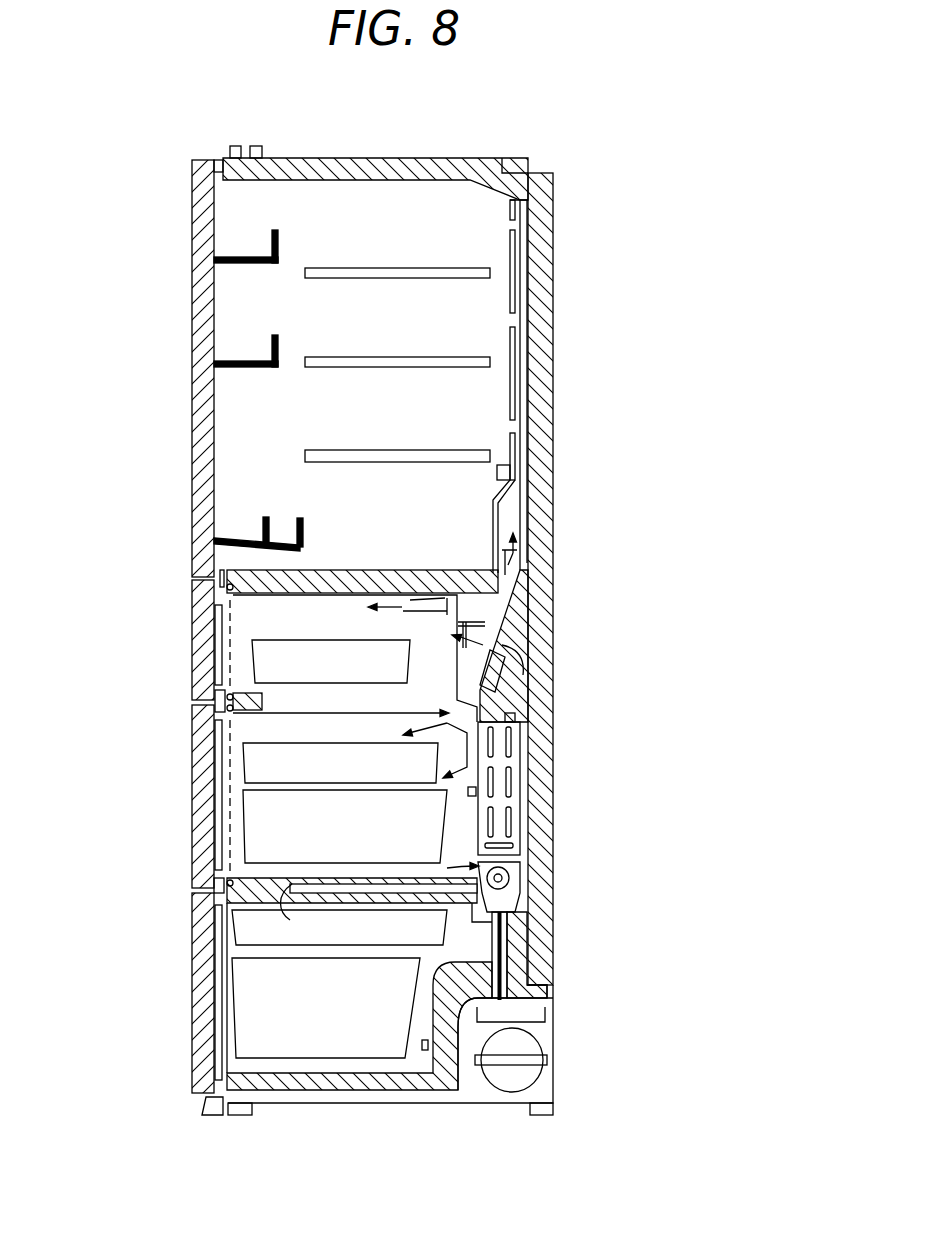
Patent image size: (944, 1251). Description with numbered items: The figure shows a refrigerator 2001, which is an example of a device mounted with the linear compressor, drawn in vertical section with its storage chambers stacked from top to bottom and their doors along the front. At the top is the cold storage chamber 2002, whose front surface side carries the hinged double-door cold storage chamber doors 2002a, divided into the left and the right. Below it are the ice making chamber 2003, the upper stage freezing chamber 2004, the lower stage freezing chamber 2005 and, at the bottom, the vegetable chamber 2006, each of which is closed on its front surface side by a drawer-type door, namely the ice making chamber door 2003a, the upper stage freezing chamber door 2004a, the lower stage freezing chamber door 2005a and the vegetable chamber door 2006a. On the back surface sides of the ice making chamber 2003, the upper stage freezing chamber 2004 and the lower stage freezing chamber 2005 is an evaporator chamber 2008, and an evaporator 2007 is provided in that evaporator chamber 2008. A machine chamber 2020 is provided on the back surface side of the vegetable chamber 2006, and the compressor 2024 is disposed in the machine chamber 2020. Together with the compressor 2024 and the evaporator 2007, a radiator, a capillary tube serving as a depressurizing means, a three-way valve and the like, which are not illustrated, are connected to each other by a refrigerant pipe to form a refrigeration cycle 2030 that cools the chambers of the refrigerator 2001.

The refrigerator 2001 is at (590, 148).
The cold storage chamber 2002 is at (423, 346).
The cold storage chamber doors 2002a is at (192, 398).
The ice making chamber 2003 is at (395, 674).
The ice making chamber door 2003a is at (192, 630).
The upper stage freezing chamber 2004 is at (359, 658).
The upper stage freezing chamber door 2004a is at (136, 640).
The lower stage freezing chamber 2005 is at (330, 834).
The lower stage freezing chamber door 2005a is at (192, 788).
The vegetable chamber 2006 is at (329, 1019).
The vegetable chamber door 2006a is at (192, 977).
The evaporator 2007 is at (521, 755).
The evaporator chamber 2008 is at (495, 710).
The machine chamber 2020 is at (473, 1080).
The compressor 2024 is at (525, 1045).
The refrigeration cycle 2030 is at (614, 902).